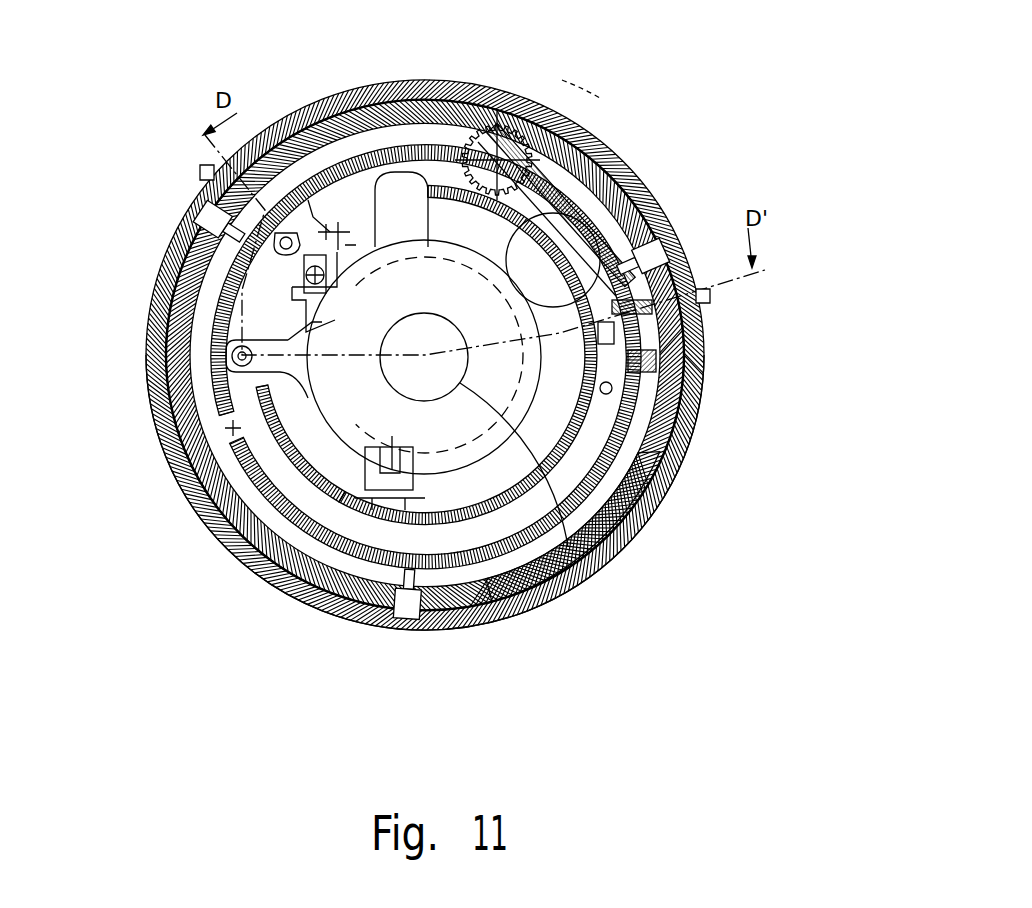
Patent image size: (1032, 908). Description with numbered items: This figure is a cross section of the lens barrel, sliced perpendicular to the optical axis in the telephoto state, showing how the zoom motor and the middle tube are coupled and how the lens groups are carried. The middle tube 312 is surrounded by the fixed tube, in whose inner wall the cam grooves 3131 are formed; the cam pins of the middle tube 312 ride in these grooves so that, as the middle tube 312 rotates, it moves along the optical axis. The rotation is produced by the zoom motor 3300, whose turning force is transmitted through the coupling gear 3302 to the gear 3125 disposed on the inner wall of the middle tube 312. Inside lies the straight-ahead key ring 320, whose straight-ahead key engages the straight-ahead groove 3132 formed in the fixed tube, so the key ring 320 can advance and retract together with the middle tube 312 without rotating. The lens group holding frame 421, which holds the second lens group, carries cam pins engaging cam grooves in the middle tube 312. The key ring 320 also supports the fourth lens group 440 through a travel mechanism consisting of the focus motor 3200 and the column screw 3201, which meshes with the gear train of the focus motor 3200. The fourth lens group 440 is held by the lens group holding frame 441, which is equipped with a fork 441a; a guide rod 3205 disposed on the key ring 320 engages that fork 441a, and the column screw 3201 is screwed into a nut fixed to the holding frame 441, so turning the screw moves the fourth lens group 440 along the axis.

The middle tube 312 is at (693, 427).
The straight-ahead key ring 320 is at (297, 123).
The gear 3125 is at (580, 122).
The cam grooves 3131 is at (197, 194).
The straight-ahead groove 3132 is at (200, 172).
The focus motor 3200 is at (382, 190).
The column screw 3201 is at (232, 358).
The guide rod 3205 is at (606, 331).
The zoom motor 3300 is at (637, 187).
The coupling gear 3302 is at (505, 110).
The lens group holding frame 421 is at (280, 440).
The fourth lens group 440 is at (577, 560).
The lens group holding frame 441 is at (660, 360).
The fork 441a is at (642, 362).